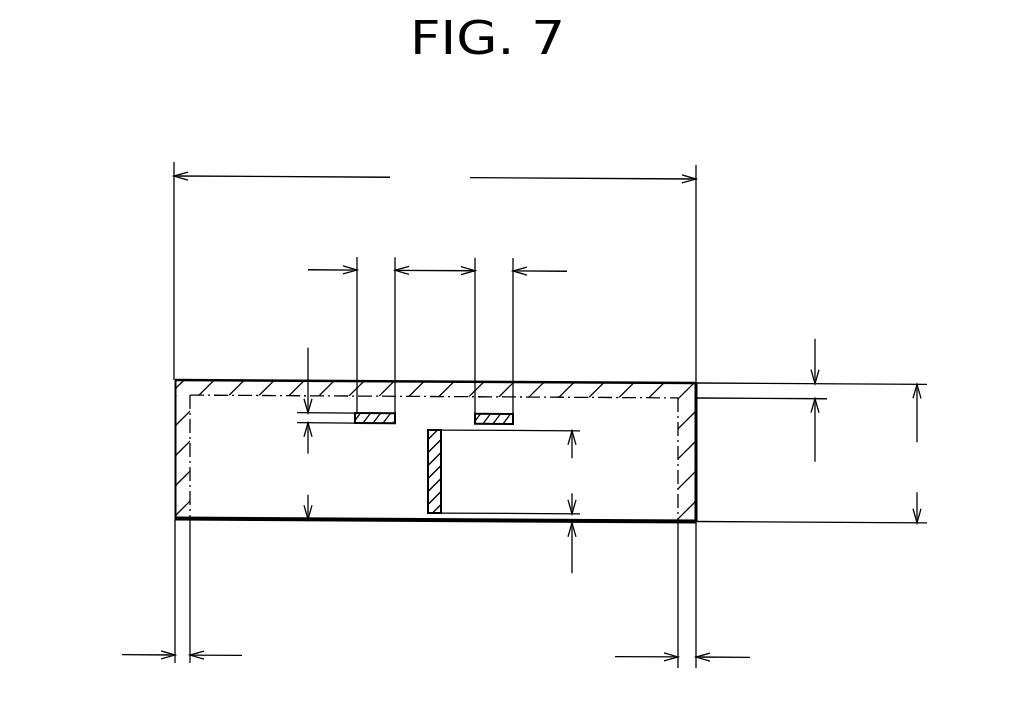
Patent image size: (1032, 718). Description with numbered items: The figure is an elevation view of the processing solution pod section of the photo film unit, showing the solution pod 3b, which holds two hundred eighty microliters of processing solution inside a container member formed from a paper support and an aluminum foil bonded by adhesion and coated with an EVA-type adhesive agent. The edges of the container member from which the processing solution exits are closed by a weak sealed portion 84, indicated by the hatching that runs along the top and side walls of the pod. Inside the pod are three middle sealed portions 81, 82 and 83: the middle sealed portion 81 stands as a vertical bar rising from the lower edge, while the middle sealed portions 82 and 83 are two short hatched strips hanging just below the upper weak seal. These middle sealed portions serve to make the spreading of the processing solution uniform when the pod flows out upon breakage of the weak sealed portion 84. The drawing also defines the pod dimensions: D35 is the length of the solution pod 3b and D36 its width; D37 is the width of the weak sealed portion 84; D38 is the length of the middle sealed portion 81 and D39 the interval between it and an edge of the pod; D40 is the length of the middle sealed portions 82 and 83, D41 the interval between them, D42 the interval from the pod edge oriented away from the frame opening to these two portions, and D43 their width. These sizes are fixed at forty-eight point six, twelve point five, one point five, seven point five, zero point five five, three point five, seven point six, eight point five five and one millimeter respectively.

The solution pod 3b is at (274, 548).
The middle sealed portion 81 is at (428, 506).
The middle sealed portion 82 is at (371, 424).
The middle sealed portion 83 is at (490, 422).
The weak sealed portion 84 is at (577, 382).
The length of the solution pod D35 is at (435, 269).
The width of the solution pod D36 is at (820, 453).
The width of the weak sealed portion D37 is at (447, 507).
The length of the middle sealed portion D38 is at (520, 472).
The interval between the middle sealed portion and an edge of the solution pod D39 is at (570, 571).
The length of the middle sealed portions D40 is at (438, 333).
The interval between the middle sealed portions D41 is at (435, 249).
The interval between the edge of the solution pod and the middle sealed portions D42 is at (304, 471).
The width of the middle sealed portions D43 is at (315, 365).